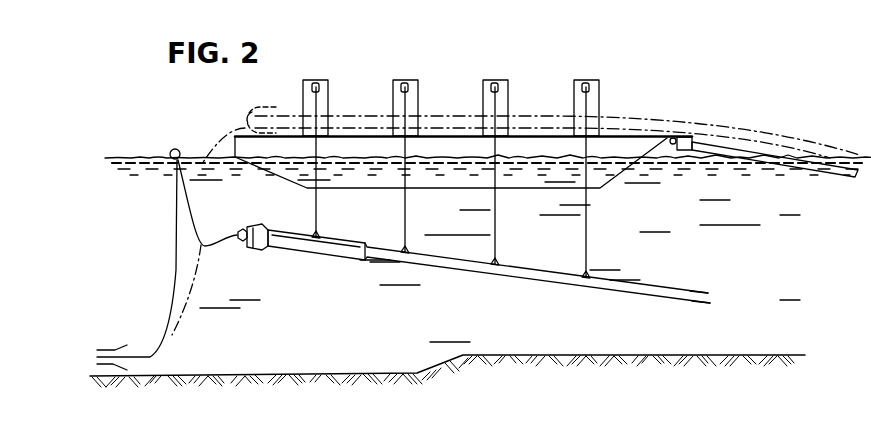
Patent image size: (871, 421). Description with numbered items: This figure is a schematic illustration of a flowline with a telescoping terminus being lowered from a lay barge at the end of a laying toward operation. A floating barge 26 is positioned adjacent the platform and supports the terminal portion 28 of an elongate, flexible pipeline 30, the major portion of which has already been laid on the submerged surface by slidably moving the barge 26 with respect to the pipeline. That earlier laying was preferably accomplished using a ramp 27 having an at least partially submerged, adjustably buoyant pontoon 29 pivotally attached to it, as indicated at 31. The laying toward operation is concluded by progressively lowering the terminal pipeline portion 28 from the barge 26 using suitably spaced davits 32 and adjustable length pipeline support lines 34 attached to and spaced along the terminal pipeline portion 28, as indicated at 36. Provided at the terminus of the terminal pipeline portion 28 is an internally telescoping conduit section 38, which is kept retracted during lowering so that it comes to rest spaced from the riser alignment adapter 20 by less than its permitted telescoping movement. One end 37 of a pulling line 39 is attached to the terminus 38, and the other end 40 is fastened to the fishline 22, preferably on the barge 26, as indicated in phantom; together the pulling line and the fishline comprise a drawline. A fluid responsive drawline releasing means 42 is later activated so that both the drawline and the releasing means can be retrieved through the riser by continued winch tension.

The alignment adapter 20 is at (122, 337).
The fishline 22 is at (177, 221).
The floating barge 26 is at (663, 112).
The ramp 27 is at (622, 137).
The terminal portion 28 is at (455, 273).
The pontoon 29 is at (823, 176).
The pipeline 30 is at (702, 286).
The pivotal attachment 31 is at (673, 146).
The davits 32 is at (337, 86).
The pipeline support lines 34 is at (318, 156).
The attachment points 36 is at (320, 236).
The end of pulling line 37 is at (257, 208).
The telescoping conduit section 38 is at (288, 253).
The pulling line 39 is at (223, 232).
The other end of pulling line 40 is at (177, 148).
The fluid responsive drawline releasing means 42 is at (249, 250).